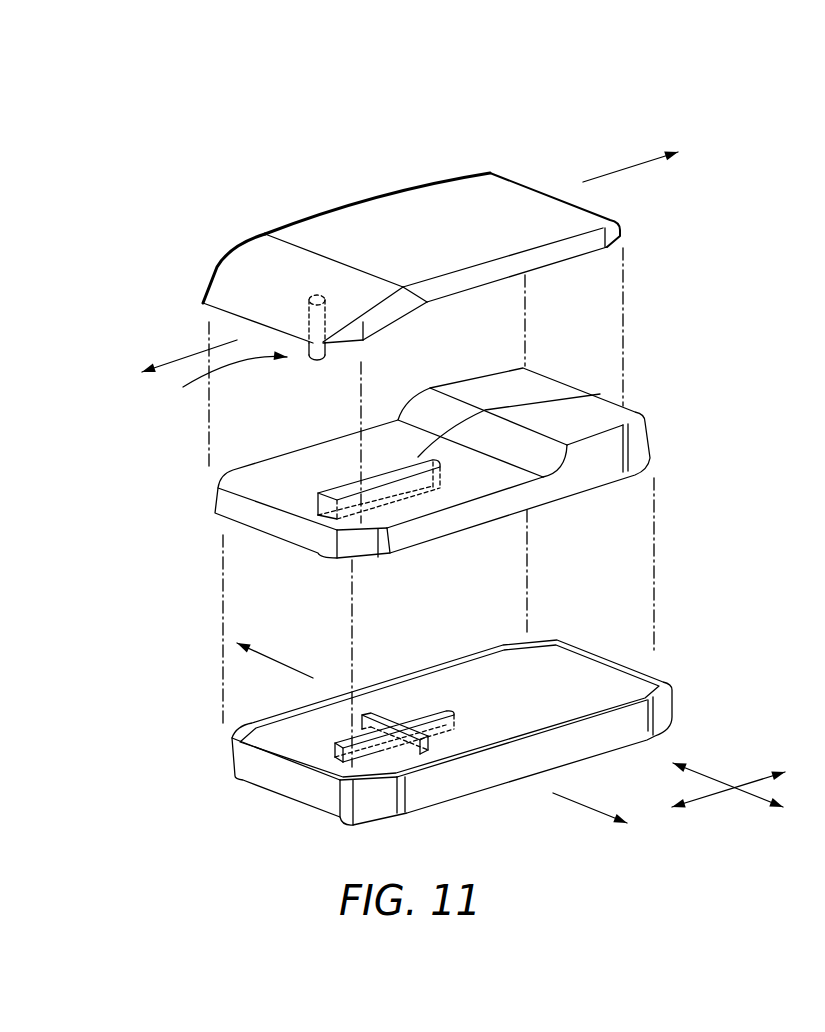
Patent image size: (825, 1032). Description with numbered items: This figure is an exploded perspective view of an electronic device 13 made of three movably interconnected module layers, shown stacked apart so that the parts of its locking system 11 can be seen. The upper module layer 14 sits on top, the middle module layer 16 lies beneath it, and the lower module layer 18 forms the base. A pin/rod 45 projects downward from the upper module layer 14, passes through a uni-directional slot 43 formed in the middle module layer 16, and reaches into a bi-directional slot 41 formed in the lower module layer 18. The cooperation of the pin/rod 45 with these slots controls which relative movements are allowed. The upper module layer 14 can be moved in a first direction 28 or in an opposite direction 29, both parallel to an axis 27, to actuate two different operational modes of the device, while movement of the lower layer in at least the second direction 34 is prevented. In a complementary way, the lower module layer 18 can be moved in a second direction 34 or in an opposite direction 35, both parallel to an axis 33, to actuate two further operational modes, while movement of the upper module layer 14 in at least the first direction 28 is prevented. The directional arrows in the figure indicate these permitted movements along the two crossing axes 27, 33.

The electronic device 13 is at (280, 112).
The upper module layer 14 is at (217, 287).
The middle module layer 16 is at (223, 504).
The lower module layer 18 is at (257, 775).
The locking system 11 is at (223, 380).
The first direction 28 is at (632, 167).
The opposite direction 29 is at (183, 352).
The second direction 34 is at (596, 810).
The opposite direction 35 is at (270, 660).
The axis 27 is at (735, 787).
The axis 33 is at (740, 792).
The bi-directional slot 41 is at (450, 713).
The uni-directional slot 43 is at (600, 394).
The pin/rod 45 is at (316, 358).